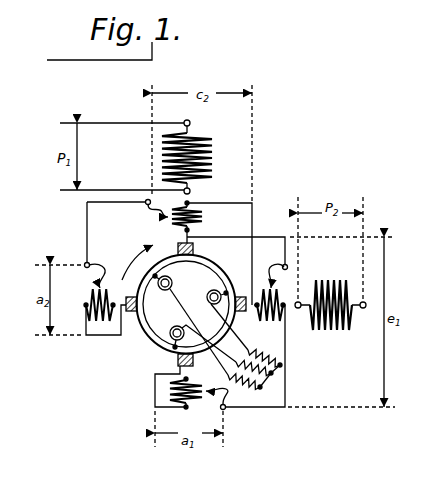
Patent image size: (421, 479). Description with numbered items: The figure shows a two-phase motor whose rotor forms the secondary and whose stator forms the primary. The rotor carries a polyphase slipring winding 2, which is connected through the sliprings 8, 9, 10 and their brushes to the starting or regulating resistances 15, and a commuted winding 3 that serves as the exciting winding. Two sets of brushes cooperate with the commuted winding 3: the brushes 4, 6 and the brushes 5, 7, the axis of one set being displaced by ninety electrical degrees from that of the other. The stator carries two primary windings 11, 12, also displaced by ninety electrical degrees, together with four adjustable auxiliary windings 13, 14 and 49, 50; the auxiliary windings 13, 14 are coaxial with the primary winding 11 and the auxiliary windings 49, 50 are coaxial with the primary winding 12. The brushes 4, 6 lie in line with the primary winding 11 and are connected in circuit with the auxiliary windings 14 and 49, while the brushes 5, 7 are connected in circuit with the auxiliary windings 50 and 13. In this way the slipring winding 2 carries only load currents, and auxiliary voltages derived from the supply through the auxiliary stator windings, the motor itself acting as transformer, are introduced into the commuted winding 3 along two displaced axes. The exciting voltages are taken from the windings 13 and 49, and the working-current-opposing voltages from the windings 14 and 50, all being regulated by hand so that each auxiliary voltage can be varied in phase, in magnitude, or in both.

The polyphase slipring winding 2 is at (214, 267).
The commuted winding 3 is at (150, 343).
The brush 4 is at (240, 313).
The brush 5 is at (192, 248).
The brush 6 is at (130, 296).
The brush 7 is at (178, 363).
The slipring 8 is at (224, 315).
The slipring 9 is at (190, 321).
The slipring 10 is at (197, 342).
The primary winding 11 is at (330, 314).
The primary winding 12 is at (198, 157).
The adjustable auxiliary winding 13 is at (270, 300).
The adjustable auxiliary winding 14 is at (90, 292).
The starting or regulating resistances 15 is at (278, 368).
The adjustable auxiliary winding 49 is at (186, 216).
The adjustable auxiliary winding 50 is at (199, 399).